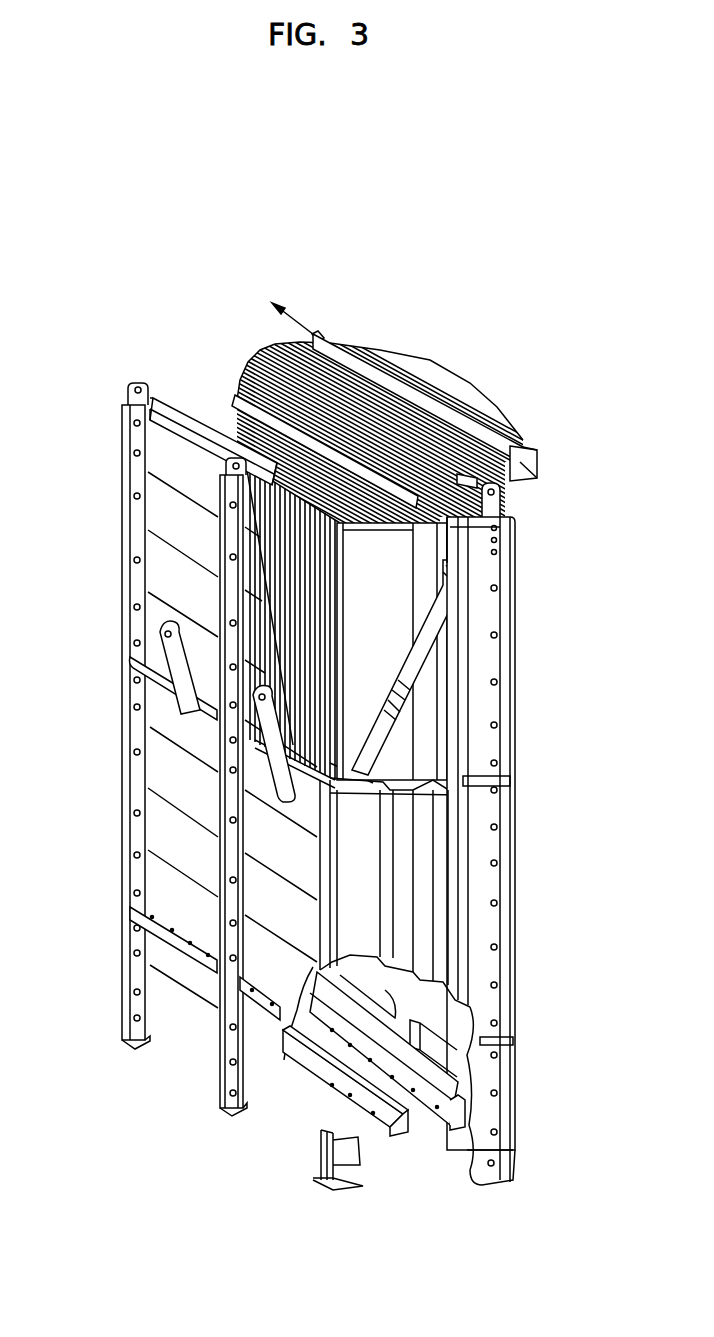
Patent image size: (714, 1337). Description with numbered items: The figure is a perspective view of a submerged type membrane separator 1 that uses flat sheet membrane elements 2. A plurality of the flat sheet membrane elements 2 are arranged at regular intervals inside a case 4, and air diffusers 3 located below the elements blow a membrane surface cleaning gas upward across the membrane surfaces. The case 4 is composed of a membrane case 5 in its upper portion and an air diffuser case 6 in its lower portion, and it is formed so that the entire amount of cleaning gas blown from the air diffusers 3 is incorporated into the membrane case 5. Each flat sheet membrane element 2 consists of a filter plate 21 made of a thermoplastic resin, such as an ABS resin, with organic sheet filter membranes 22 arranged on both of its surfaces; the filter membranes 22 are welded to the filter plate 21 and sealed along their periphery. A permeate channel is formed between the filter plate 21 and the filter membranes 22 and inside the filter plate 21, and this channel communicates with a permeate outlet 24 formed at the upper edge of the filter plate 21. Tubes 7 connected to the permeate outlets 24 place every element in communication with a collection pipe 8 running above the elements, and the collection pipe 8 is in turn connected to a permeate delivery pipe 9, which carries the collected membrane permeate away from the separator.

The membrane separator 1 is at (172, 390).
The flat sheet membrane element 2 is at (285, 580).
The air diffuser 3 is at (318, 1068).
The case 4 is at (164, 729).
The membrane case 5 is at (155, 627).
The air diffuser case 6 is at (188, 761).
The tube 7 is at (430, 405).
The collection pipe 8 is at (488, 432).
The permeate delivery pipe 9 is at (313, 318).
The filter plate 21 is at (445, 538).
The filter membrane 22 is at (393, 583).
The permeate outlet 24 is at (477, 482).